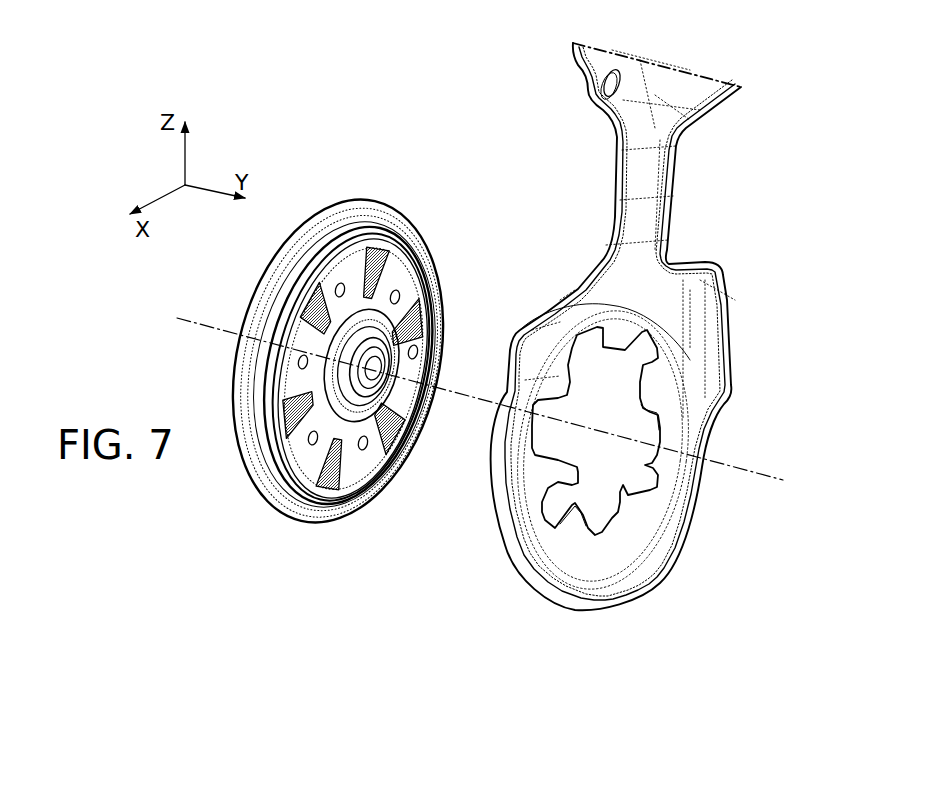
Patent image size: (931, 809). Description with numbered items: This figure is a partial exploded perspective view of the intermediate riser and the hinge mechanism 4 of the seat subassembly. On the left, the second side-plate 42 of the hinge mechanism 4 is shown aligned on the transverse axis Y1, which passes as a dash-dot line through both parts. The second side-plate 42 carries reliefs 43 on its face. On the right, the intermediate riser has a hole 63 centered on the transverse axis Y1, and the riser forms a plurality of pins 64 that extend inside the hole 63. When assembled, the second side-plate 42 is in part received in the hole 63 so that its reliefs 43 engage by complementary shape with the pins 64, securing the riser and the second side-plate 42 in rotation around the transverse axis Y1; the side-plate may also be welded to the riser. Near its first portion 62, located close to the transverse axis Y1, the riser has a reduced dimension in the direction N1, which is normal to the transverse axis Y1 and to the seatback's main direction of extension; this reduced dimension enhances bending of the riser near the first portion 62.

The hinge mechanism 4 is at (311, 400).
The second side-plate 42 is at (358, 473).
The reliefs 43 is at (310, 450).
The first portion 62 is at (654, 364).
The hole 63 is at (606, 386).
The pins 64 is at (657, 398).
The normal direction N1 is at (617, 165).
The transverse axis Y1 is at (770, 473).